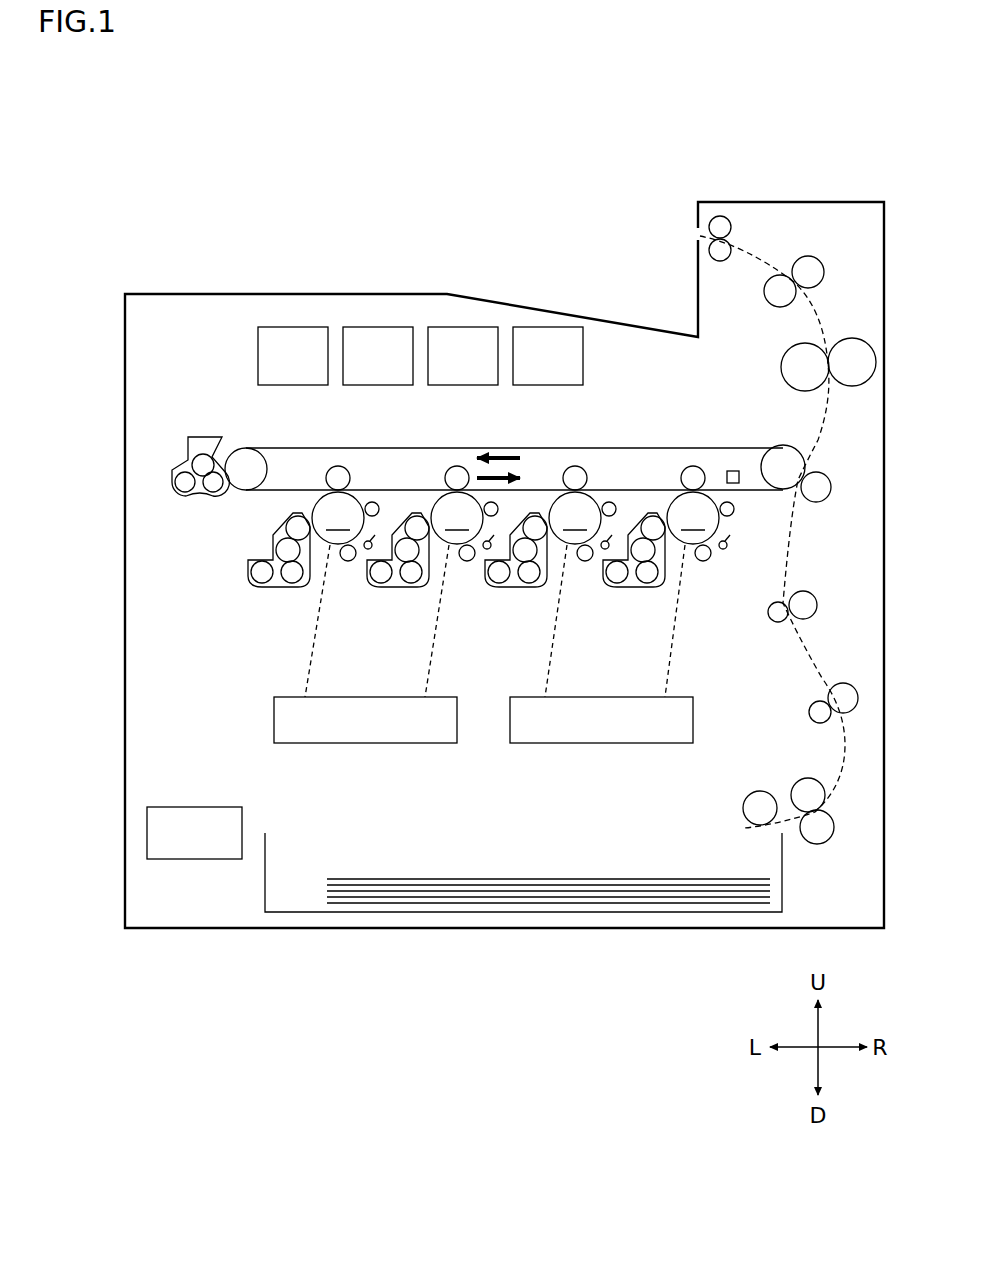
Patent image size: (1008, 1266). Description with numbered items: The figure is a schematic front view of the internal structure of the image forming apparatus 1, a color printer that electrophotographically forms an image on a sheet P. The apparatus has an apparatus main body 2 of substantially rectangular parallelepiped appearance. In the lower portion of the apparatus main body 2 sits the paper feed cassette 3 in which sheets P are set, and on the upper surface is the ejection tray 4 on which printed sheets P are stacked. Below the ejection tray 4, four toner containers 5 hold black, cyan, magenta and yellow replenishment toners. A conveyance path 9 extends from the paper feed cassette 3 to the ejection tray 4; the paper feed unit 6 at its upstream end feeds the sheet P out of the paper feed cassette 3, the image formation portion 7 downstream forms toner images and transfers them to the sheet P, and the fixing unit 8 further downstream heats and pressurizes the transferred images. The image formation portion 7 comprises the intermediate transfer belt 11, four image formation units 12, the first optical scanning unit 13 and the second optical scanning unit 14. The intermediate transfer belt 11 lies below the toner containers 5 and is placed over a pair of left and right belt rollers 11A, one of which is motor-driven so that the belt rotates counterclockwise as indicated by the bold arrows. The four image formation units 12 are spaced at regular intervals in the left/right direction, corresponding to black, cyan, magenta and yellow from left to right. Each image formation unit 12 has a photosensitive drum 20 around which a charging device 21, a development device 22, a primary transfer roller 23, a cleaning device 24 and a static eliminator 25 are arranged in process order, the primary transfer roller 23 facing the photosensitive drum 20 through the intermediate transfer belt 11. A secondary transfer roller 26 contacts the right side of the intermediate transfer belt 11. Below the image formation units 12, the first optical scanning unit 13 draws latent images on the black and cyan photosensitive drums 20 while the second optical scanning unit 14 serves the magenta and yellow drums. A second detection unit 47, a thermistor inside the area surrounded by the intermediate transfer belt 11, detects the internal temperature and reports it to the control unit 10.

The image forming apparatus 1 is at (449, 180).
The apparatus main body 2 is at (125, 397).
The paper feed cassette 3 is at (784, 887).
The ejection tray 4 is at (628, 324).
The toner container 5 is at (289, 372).
The paper feed unit 6 is at (780, 783).
The image formation portion 7 is at (230, 545).
The fixing unit 8 is at (840, 330).
The conveyance path 9 is at (823, 645).
The control unit 10 is at (190, 822).
The intermediate transfer belt 11 is at (612, 447).
The belt roller 11A is at (240, 456).
The image formation unit 12 is at (250, 592).
The first optical scanning unit 13 is at (338, 730).
The second optical scanning unit 14 is at (602, 730).
The photosensitive drum 20 is at (515, 518).
The charging device 21 is at (348, 562).
The development device 22 is at (293, 589).
The primary transfer roller 23 is at (330, 470).
The cleaning device 24 is at (374, 502).
The static eliminator 25 is at (369, 550).
The secondary transfer roller 26 is at (816, 502).
The second detection unit 47 is at (733, 471).
The sheet P is at (525, 872).